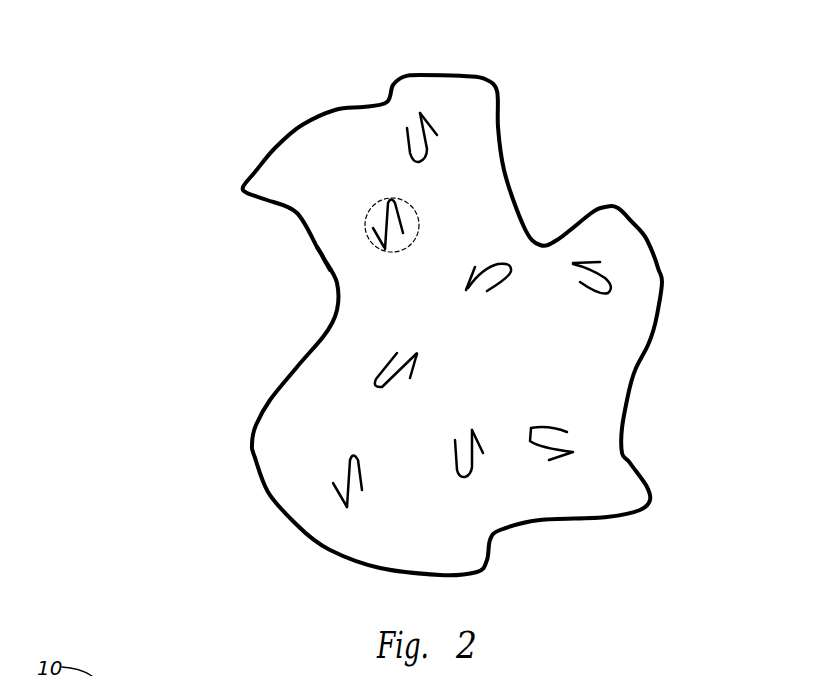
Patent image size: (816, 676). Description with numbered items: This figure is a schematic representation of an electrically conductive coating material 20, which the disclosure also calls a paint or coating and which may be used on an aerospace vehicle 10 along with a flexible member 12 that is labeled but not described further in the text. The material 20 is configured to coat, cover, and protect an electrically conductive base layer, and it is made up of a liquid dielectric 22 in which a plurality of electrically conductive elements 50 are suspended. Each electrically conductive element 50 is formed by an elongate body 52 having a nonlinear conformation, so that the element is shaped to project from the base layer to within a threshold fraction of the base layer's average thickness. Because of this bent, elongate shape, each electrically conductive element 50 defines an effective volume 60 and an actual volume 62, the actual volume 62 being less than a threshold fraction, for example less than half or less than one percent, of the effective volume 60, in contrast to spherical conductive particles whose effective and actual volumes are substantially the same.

The aerospace vehicle 10 is at (137, 43).
The flexible member 12 is at (138, 103).
The electrically conductive coating material 20 is at (202, 135).
The liquid dielectric 22 is at (320, 242).
The electrically conductive element 50 is at (403, 143).
The elongate body 52 is at (412, 160).
The effective volume 60 is at (360, 227).
The actual volume 62 is at (404, 251).